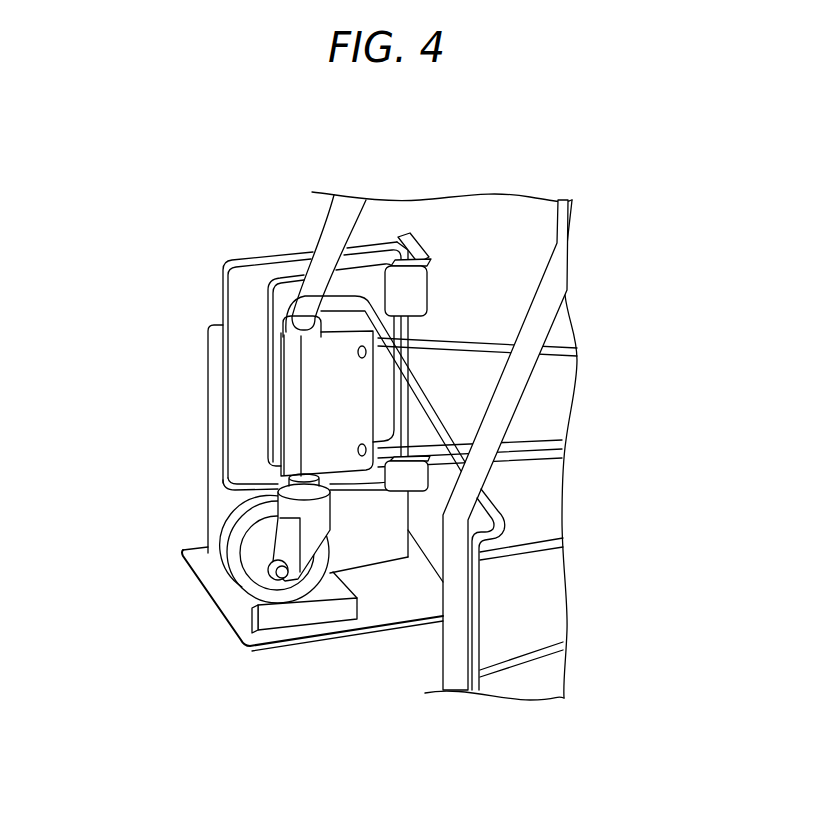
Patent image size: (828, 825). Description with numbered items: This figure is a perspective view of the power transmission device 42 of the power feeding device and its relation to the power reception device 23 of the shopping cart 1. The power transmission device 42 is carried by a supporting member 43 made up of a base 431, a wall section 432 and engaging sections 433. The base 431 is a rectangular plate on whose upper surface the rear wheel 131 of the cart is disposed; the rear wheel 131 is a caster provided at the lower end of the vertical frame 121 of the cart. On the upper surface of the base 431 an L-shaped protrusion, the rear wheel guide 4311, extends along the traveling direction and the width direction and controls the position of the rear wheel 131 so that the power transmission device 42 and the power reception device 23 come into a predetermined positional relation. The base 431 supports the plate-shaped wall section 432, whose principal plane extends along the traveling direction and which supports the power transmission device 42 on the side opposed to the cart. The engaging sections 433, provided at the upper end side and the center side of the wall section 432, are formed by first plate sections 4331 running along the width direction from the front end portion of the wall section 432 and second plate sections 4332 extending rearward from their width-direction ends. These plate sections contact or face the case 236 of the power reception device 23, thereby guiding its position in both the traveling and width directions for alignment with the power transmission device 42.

The shopping cart 1 is at (600, 268).
The power reception device 23 is at (245, 370).
The power transmission device 42 is at (272, 290).
The supporting member 43 is at (268, 497).
The vertical frame 121 is at (338, 236).
The rear wheel 131 is at (287, 598).
The case 236 is at (275, 365).
The base 431 is at (268, 649).
The wall section 432 is at (371, 547).
The engaging sections 433 is at (462, 407).
The rear wheel guide 4311 is at (278, 623).
The first plate sections 4331 is at (423, 257).
The second plate sections 4332 is at (417, 293).